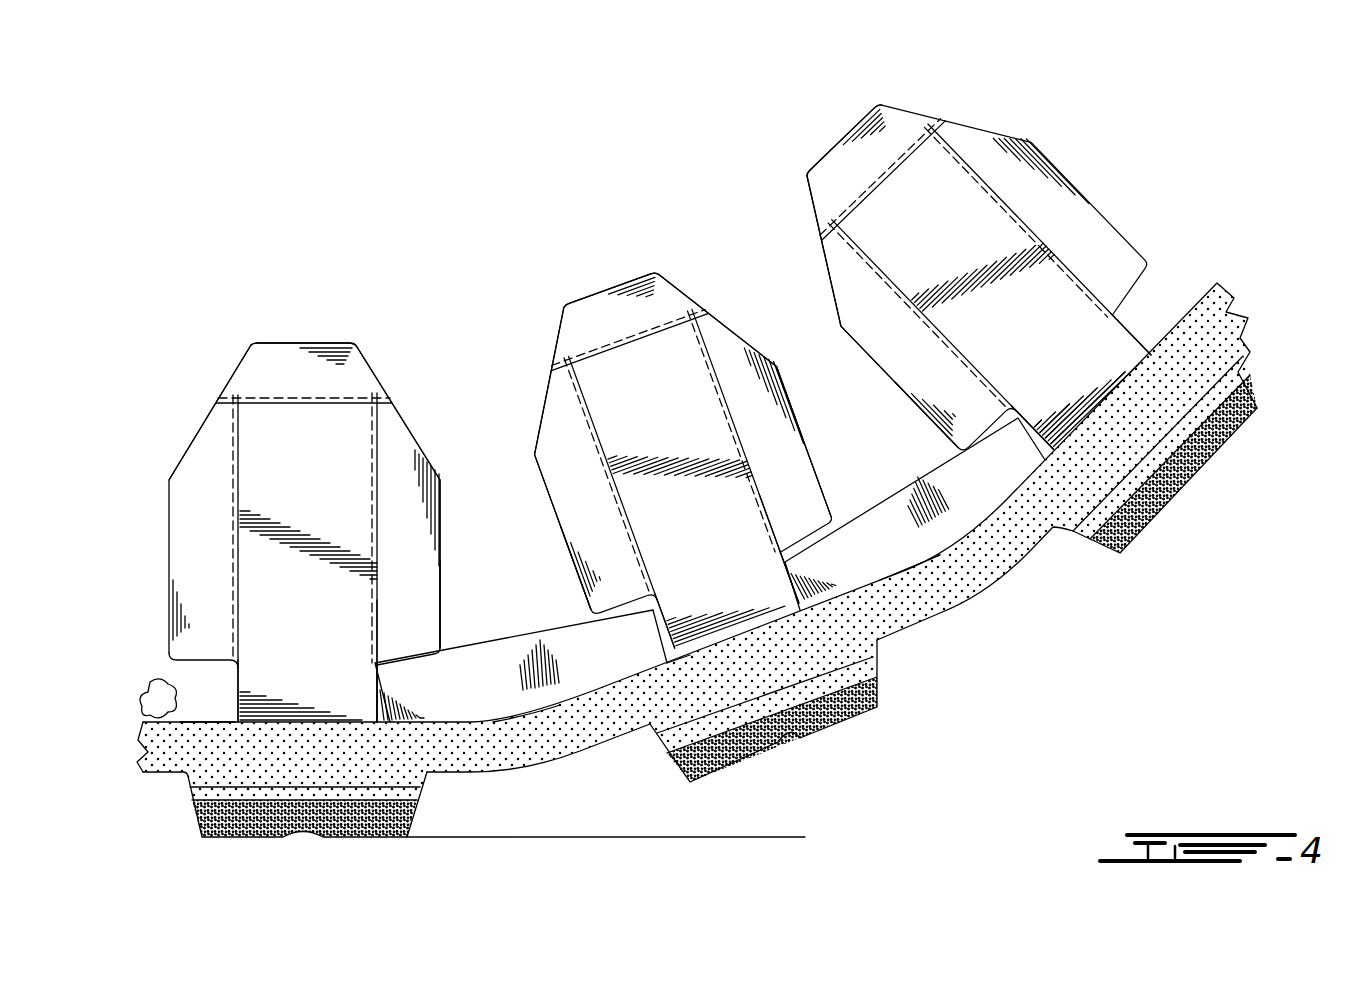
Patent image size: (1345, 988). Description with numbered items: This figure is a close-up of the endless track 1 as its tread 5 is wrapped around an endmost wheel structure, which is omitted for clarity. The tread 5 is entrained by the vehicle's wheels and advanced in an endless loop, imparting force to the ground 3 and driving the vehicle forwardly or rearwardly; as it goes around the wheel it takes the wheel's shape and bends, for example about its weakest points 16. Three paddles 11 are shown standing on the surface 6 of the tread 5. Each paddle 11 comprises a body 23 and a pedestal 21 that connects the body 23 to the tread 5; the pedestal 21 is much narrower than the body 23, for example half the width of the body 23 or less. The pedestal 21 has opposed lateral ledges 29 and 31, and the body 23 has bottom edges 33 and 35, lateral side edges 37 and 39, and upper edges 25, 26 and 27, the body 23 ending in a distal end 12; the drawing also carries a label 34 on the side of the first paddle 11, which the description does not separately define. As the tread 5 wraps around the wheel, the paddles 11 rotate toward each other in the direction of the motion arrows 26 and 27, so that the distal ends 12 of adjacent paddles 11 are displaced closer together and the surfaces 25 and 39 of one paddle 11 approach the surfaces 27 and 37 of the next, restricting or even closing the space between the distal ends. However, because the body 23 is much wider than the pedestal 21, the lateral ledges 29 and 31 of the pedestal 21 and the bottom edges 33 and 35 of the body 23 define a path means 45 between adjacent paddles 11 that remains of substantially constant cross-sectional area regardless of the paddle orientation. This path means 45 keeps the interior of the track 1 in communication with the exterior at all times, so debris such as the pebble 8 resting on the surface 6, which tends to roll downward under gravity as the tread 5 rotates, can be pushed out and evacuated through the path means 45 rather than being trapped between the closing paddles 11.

The endless track 1 is at (699, 450).
The ground 3 is at (777, 835).
The tread 5 is at (1240, 330).
The surface 6 is at (192, 724).
The pebble 8 is at (153, 697).
The paddle 11 is at (253, 362).
The distal end 12 is at (303, 363).
The weakest point 16 is at (453, 753).
The pedestal 21 is at (315, 707).
The body 23 is at (320, 487).
The upper edge 25 is at (397, 420).
The motion arrow 26 is at (415, 352).
The upper edge 27 is at (550, 352).
The lateral ledge 29 is at (667, 630).
The lateral ledge 31 is at (373, 693).
The bottom edge 33 is at (985, 420).
The lower side face 34 is at (437, 562).
The bottom edge 35 is at (410, 660).
The lateral side edge 37 is at (557, 537).
The lateral side edge 39 is at (807, 443).
The path means 45 is at (517, 687).